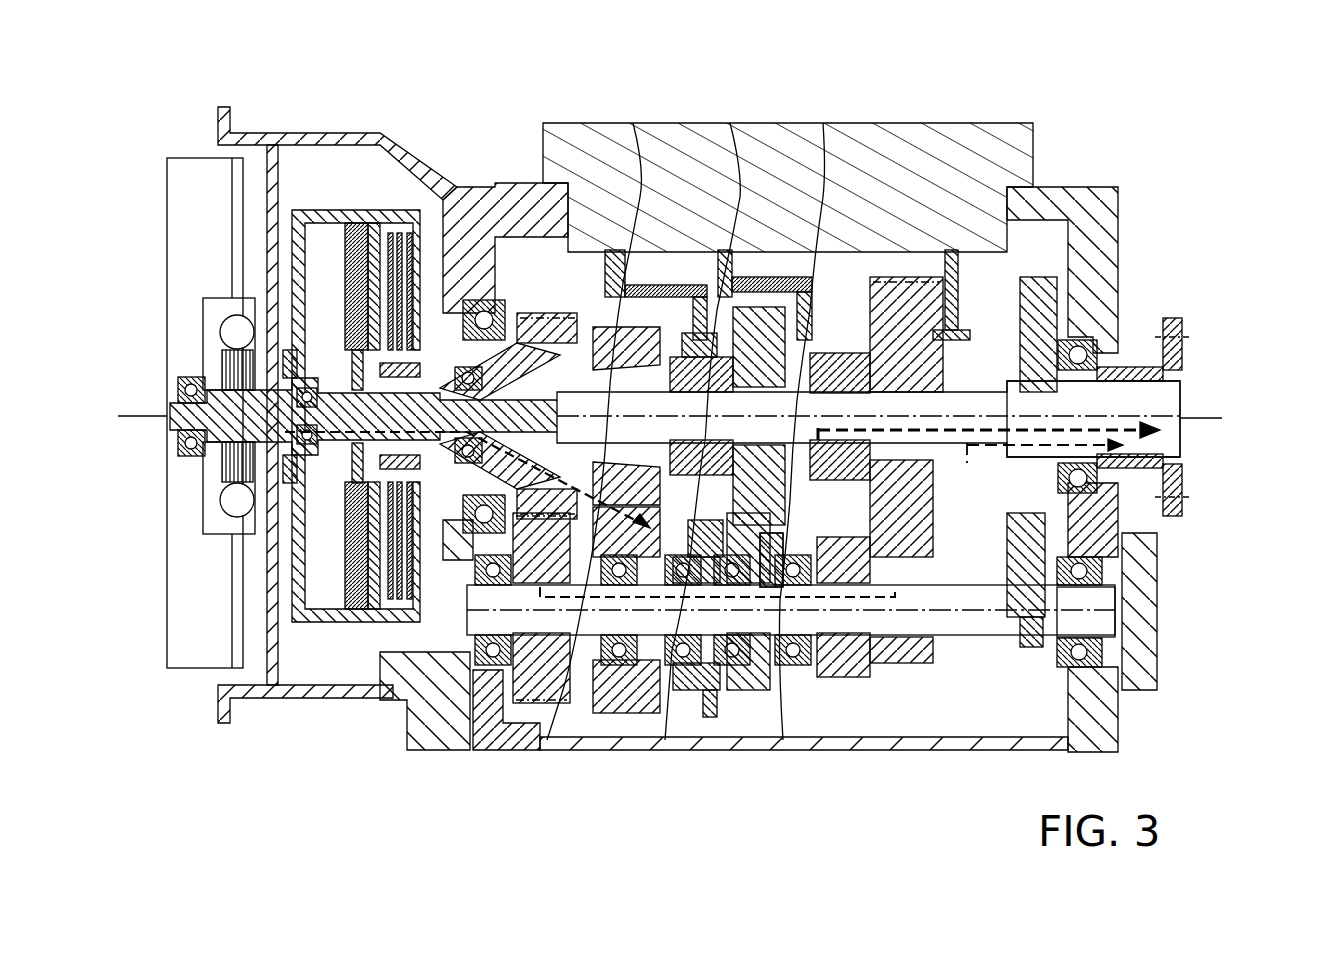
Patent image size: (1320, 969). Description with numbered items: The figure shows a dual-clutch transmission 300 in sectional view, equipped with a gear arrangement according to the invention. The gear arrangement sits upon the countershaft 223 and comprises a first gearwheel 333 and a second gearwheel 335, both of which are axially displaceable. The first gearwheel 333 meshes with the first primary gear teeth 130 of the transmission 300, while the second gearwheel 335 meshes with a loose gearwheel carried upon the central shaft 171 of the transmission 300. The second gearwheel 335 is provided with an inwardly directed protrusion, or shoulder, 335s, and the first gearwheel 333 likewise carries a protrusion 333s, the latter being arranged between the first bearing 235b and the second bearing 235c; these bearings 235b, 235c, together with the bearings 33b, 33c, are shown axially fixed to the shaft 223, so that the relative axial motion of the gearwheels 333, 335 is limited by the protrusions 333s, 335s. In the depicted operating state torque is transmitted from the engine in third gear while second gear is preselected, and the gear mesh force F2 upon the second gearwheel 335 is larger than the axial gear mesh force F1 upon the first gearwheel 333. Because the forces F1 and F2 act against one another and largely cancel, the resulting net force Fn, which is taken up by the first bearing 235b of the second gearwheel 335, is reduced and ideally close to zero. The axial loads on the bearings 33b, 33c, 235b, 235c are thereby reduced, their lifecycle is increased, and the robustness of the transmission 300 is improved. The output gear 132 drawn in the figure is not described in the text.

The dual-clutch transmission 300 is at (1150, 108).
The first primary gear teeth 130 is at (547, 740).
The bearing 33b is at (578, 692).
The first gearwheel 333 is at (641, 702).
The protrusion 333s is at (663, 740).
The bearing 33c is at (690, 700).
The first bearing 235b is at (715, 692).
The second gearwheel 335 is at (783, 740).
The protrusion 335s is at (790, 690).
The second bearing 235c is at (805, 685).
The output gear 132 is at (870, 507).
The central shaft 171 is at (1123, 400).
The countershaft 223 is at (1102, 623).
The axial gear mesh force F1 is at (633, 123).
The resulting net force Fn is at (730, 123).
The gear mesh force F2 is at (823, 123).